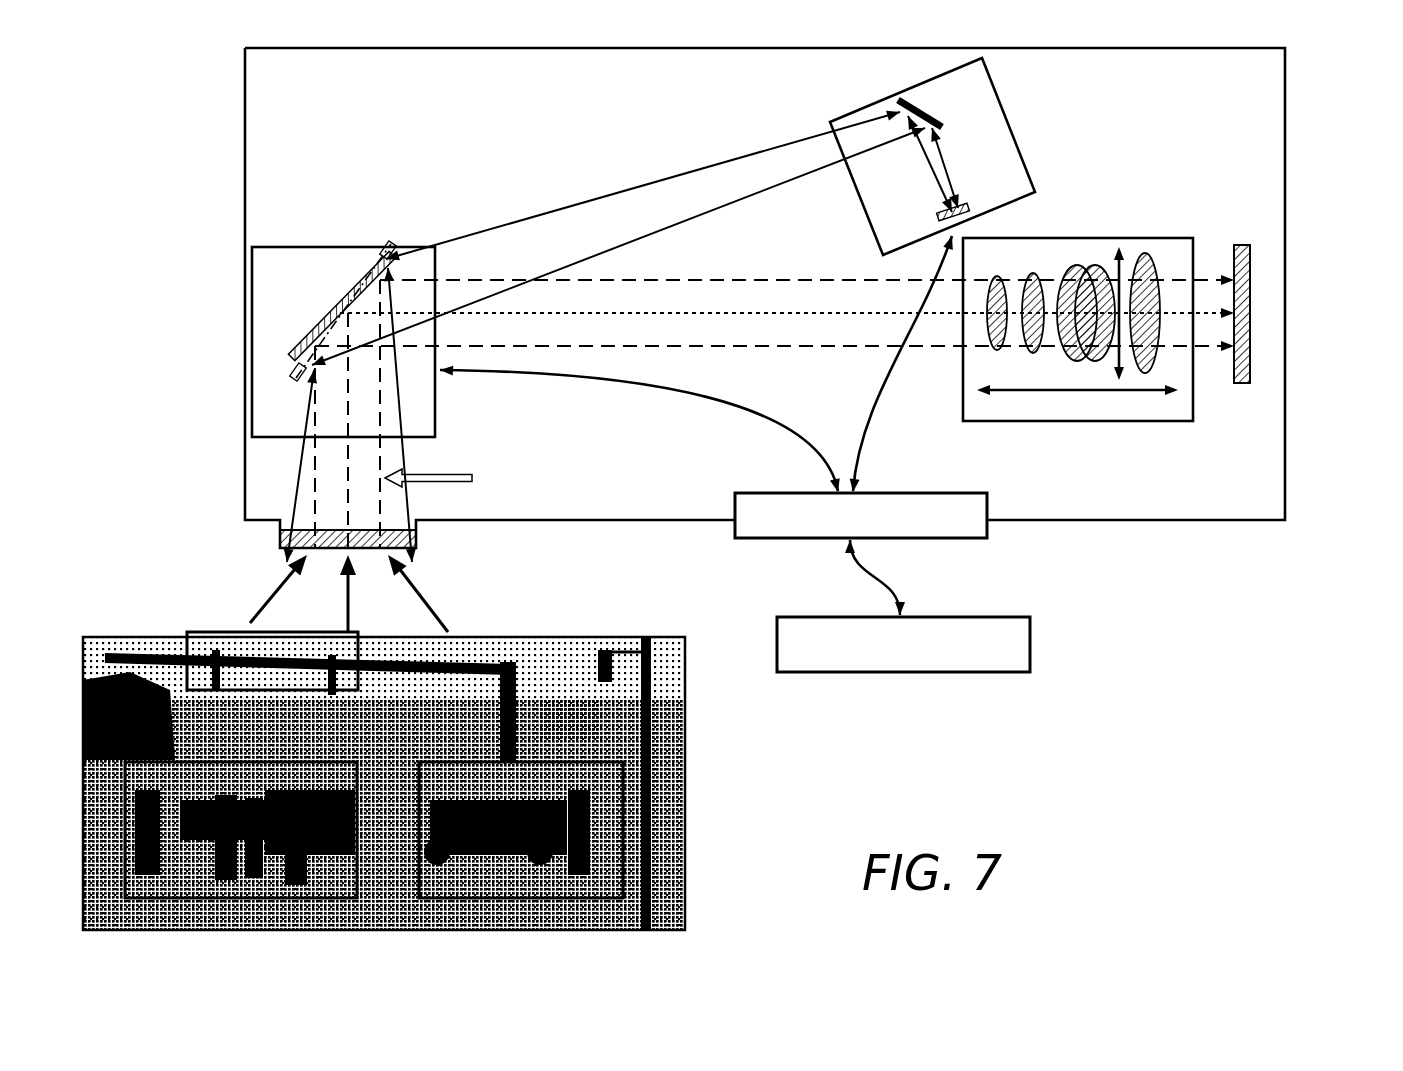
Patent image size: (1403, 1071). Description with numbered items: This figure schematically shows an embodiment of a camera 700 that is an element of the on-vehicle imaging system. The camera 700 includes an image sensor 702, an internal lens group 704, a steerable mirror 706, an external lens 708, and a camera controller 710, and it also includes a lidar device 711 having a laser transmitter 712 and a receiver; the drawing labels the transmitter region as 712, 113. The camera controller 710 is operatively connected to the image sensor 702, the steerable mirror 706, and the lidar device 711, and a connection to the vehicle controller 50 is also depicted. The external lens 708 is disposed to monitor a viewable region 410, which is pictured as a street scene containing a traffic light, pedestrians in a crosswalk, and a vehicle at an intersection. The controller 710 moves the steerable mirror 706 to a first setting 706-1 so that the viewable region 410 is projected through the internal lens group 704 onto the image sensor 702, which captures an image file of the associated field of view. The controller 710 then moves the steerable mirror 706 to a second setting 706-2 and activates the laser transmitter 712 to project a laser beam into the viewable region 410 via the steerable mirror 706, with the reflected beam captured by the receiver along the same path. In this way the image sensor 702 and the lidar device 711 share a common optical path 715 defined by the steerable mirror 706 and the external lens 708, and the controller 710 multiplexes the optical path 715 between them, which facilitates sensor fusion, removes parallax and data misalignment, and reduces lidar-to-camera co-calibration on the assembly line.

The camera 700 is at (1290, 378).
The image sensor 702 is at (1252, 290).
The internal lens group 704 is at (1063, 257).
The steerable mirror 706 is at (375, 290).
The first setting 706-1 is at (383, 247).
The second setting 706-2 is at (393, 260).
The external lens 708 is at (281, 545).
The camera controller 710 is at (883, 530).
The lidar device 711 is at (828, 123).
The laser transmitter 712 is at (1034, 167).
The detector 113 is at (968, 206).
The common optical path 715 is at (520, 491).
The vehicle controller 50 is at (918, 657).
The viewable region 410 is at (110, 632).